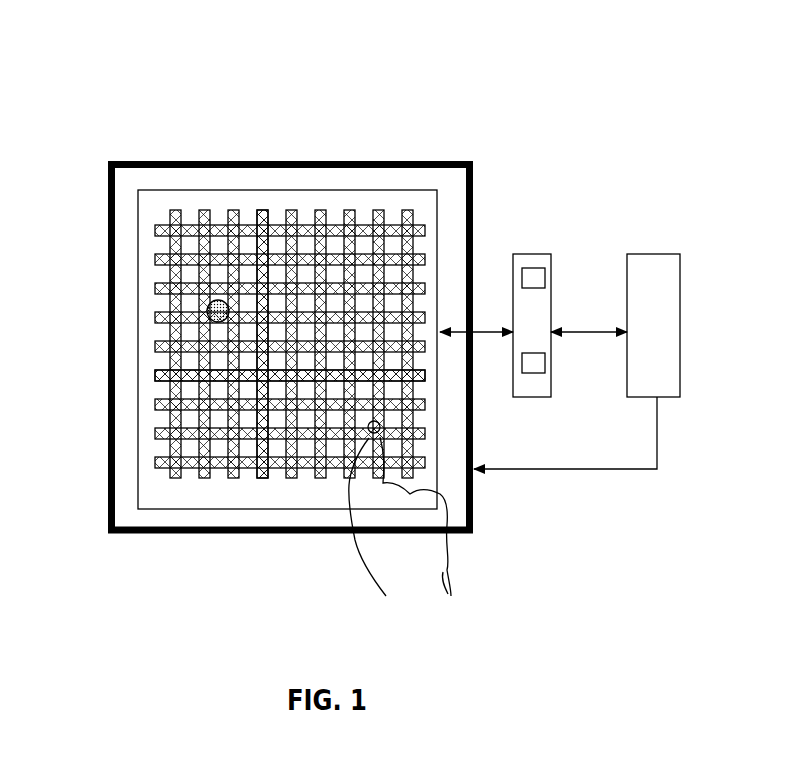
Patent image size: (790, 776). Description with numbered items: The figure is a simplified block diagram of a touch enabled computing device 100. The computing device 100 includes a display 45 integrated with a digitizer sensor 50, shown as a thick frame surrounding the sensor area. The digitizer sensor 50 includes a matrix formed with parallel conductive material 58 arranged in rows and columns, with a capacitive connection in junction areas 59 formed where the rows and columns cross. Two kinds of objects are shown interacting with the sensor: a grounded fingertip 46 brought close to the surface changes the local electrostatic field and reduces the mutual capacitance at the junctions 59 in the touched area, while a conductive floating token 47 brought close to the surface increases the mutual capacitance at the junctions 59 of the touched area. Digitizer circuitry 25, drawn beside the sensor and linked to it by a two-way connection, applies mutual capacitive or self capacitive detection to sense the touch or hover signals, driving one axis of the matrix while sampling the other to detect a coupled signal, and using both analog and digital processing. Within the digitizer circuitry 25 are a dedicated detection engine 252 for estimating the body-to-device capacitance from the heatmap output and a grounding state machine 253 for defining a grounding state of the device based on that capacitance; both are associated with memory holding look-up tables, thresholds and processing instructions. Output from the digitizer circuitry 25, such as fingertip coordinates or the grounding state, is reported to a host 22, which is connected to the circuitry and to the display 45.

The computing device 100 is at (285, 85).
The display 45 is at (403, 162).
The digitizer sensor 50 is at (438, 236).
The parallel conductive material 58 is at (347, 211).
The junction areas 59 is at (232, 370).
The conductive floating token 47 is at (210, 302).
The fingertip 46 is at (369, 433).
The digitizer circuitry 25 is at (561, 290).
The C_BD detection engine 252 is at (551, 278).
The grounding state machine 253 is at (551, 366).
The host 22 is at (655, 254).